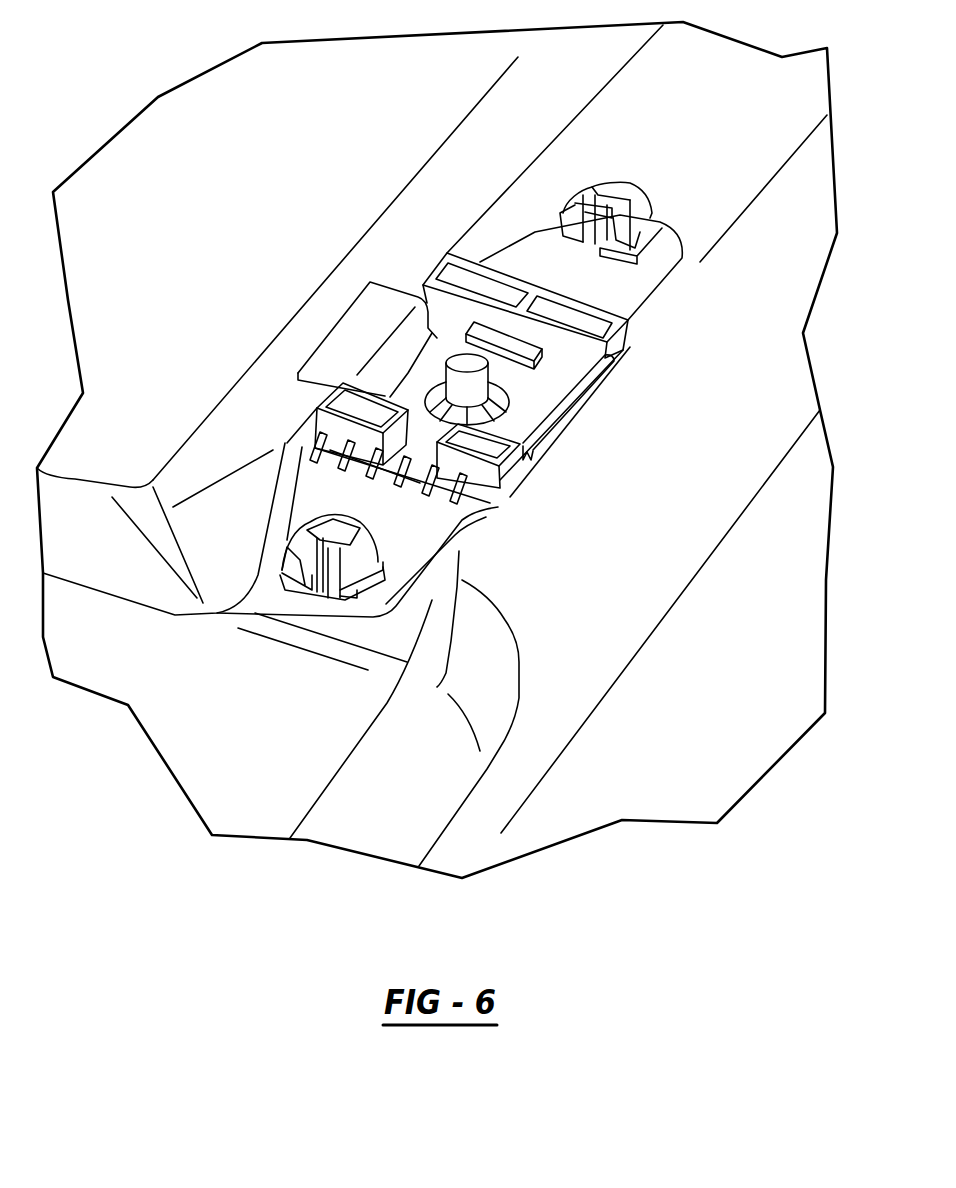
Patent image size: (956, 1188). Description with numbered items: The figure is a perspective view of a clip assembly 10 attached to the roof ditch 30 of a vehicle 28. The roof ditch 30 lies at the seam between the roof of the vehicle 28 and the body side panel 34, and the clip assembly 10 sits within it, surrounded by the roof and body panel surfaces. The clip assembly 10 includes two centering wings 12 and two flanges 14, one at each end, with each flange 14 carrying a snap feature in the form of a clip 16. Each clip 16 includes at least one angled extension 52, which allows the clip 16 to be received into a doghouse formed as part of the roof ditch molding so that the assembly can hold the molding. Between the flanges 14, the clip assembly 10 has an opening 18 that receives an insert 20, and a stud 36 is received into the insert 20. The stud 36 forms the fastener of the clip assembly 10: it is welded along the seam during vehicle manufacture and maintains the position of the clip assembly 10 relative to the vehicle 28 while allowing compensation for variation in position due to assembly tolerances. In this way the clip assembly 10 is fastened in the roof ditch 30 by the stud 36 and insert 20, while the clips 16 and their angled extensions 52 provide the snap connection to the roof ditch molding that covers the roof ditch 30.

The clip assembly 10 is at (598, 152).
The centering wing 12 is at (361, 320).
The flange 14 is at (610, 287).
The clip 16 is at (495, 400).
The opening 18 is at (453, 313).
The insert 20 is at (413, 387).
The vehicle 28 is at (233, 212).
The roof ditch 30 is at (752, 108).
The body side panel 34 is at (678, 456).
The stud 36 is at (488, 393).
The angled extension 52 is at (580, 197).